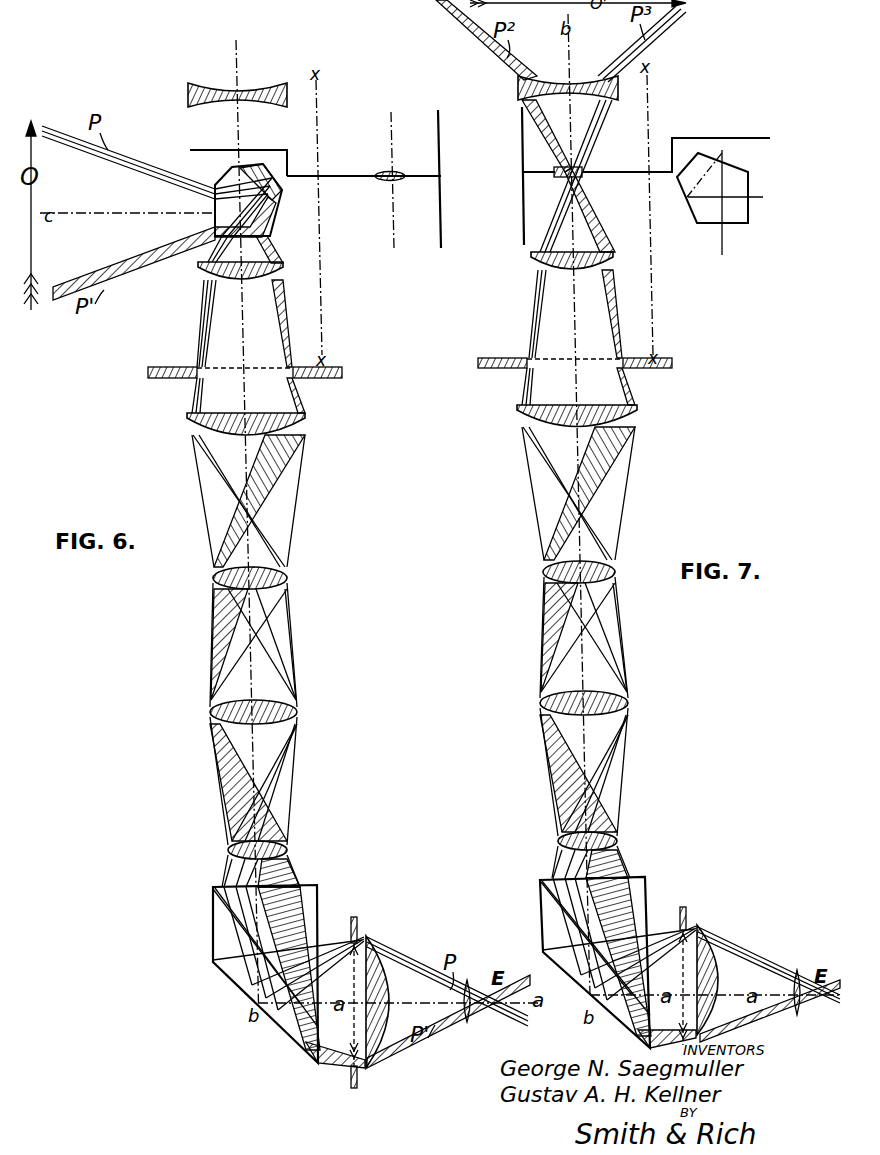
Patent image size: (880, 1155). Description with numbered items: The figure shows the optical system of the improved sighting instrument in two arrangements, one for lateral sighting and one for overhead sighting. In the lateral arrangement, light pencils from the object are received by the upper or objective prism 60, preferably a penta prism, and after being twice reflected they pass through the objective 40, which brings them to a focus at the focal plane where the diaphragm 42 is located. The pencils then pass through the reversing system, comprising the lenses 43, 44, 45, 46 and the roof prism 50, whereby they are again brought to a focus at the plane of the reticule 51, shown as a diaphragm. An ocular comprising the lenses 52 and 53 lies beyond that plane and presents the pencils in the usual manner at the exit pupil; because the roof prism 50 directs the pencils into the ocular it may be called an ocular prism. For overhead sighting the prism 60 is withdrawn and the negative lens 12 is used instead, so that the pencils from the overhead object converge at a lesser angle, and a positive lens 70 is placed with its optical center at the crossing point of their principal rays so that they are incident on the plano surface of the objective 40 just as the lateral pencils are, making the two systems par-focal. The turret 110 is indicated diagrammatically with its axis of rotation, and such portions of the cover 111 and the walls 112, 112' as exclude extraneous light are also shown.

In FIG. 6, the negative lens 12 is at (282, 70).
In FIG. 7, the negative lens 12 is at (580, 77).
In FIG. 6, the cover 111 is at (287, 150).
In FIG. 7, the cover 111 is at (758, 138).
In FIG. 6, the turret 110 is at (350, 176).
In FIG. 6, the positive lens 70 is at (395, 173).
In FIG. 7, the positive lens 70 is at (600, 172).
In FIG. 6, the wall 112 is at (462, 179).
In FIG. 7, the wall 112' is at (512, 176).
In FIG. 6, the objective prism 60 is at (281, 186).
In FIG. 7, the objective prism 60 is at (750, 185).
In FIG. 6, the objective 40 is at (230, 275).
In FIG. 7, the objective 40 is at (565, 272).
In FIG. 6, the diaphragm 42 is at (160, 367).
In FIG. 7, the diaphragm 42 is at (500, 358).
In FIG. 6, the lens 43 is at (187, 422).
In FIG. 7, the lens 43 is at (517, 413).
In FIG. 6, the lens 44 is at (213, 578).
In FIG. 7, the lens 44 is at (543, 573).
In FIG. 6, the lens 45 is at (210, 712).
In FIG. 7, the lens 45 is at (540, 704).
In FIG. 6, the lens 46 is at (228, 850).
In FIG. 7, the lens 46 is at (558, 842).
In FIG. 6, the roof prism 50 is at (213, 912).
In FIG. 7, the roof prism 50 is at (541, 912).
In FIG. 6, the reticule 51 is at (356, 926).
In FIG. 7, the reticule 51 is at (686, 916).
In FIG. 6, the ocular lens 52 is at (381, 996).
In FIG. 7, the ocular lens 52 is at (706, 990).
In FIG. 6, the ocular lens 53 is at (465, 1010).
In FIG. 7, the ocular lens 53 is at (797, 1015).